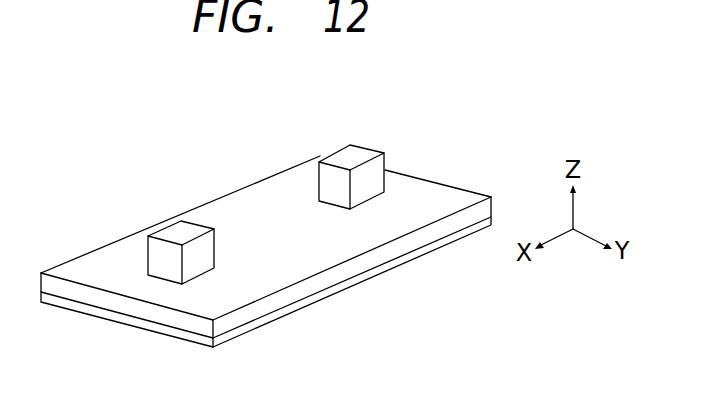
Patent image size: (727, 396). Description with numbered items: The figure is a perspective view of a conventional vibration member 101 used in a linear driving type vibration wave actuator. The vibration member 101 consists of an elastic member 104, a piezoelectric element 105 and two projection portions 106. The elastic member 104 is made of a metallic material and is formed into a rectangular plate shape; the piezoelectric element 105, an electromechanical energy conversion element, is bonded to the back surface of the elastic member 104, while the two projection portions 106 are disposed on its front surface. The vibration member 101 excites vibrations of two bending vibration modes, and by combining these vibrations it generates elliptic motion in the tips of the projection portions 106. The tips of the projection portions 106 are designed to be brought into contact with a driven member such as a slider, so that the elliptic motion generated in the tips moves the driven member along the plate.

The vibration member 101 is at (222, 117).
The elastic member 104 is at (422, 188).
The piezoelectric element 105 is at (350, 285).
The projection portions 106 is at (180, 218).